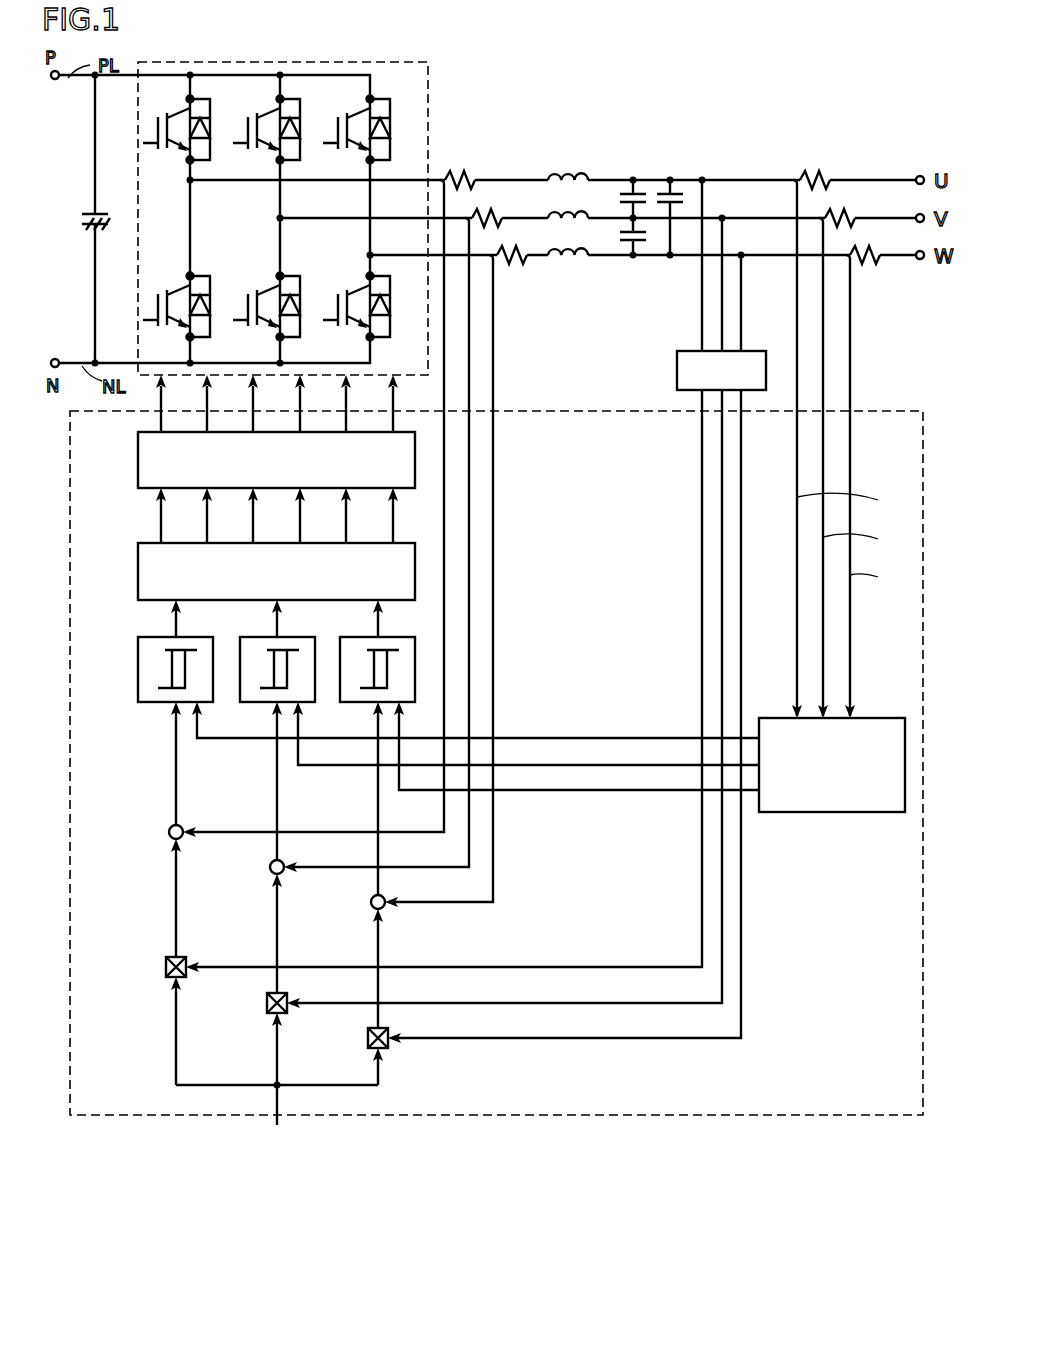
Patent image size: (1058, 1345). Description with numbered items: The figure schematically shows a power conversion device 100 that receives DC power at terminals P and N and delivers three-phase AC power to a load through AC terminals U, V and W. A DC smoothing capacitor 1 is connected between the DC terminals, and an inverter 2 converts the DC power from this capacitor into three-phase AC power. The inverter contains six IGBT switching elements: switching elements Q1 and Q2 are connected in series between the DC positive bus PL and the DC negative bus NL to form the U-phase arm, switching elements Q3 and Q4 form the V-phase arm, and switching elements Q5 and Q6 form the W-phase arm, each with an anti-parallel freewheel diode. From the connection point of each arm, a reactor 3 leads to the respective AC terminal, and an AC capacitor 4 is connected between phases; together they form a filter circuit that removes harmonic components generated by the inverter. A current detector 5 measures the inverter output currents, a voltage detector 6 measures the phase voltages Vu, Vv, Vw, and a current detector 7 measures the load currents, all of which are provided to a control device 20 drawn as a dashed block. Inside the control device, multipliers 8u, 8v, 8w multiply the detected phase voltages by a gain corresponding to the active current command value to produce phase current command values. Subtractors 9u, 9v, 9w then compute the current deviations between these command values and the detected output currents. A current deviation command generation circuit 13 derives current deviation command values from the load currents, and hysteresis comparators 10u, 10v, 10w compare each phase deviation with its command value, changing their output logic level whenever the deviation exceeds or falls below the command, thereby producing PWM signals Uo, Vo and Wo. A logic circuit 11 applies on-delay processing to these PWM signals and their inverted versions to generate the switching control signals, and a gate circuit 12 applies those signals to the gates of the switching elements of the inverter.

The power conversion device 100 is at (846, 85).
The DC smoothing capacitor 1 is at (88, 225).
The inverter 2 is at (283, 207).
The reactor 3 is at (563, 176).
The AC capacitor 4 is at (664, 192).
The current detector 5 is at (468, 178).
The voltage detector 6 is at (677, 371).
The current detector 7 is at (822, 178).
The multiplier 8u is at (186, 976).
The multiplier 8v is at (287, 1012).
The multiplier 8w is at (388, 1047).
The subtractor 9u is at (183, 839).
The subtractor 9v is at (284, 874).
The subtractor 9w is at (385, 909).
The hysteresis comparator 10u is at (158, 708).
The hysteresis comparator 10v is at (260, 708).
The hysteresis comparator 10w is at (360, 708).
The logic circuit 11 is at (138, 572).
The gate circuit 12 is at (138, 461).
The current deviation command generation circuit 13 is at (862, 812).
The control device 20 is at (868, 413).
The switching element Q1 is at (176, 127).
The switching element Q2 is at (176, 304).
The switching element Q3 is at (266, 127).
The switching element Q4 is at (266, 304).
The switching element Q5 is at (356, 127).
The switching element Q6 is at (356, 304).